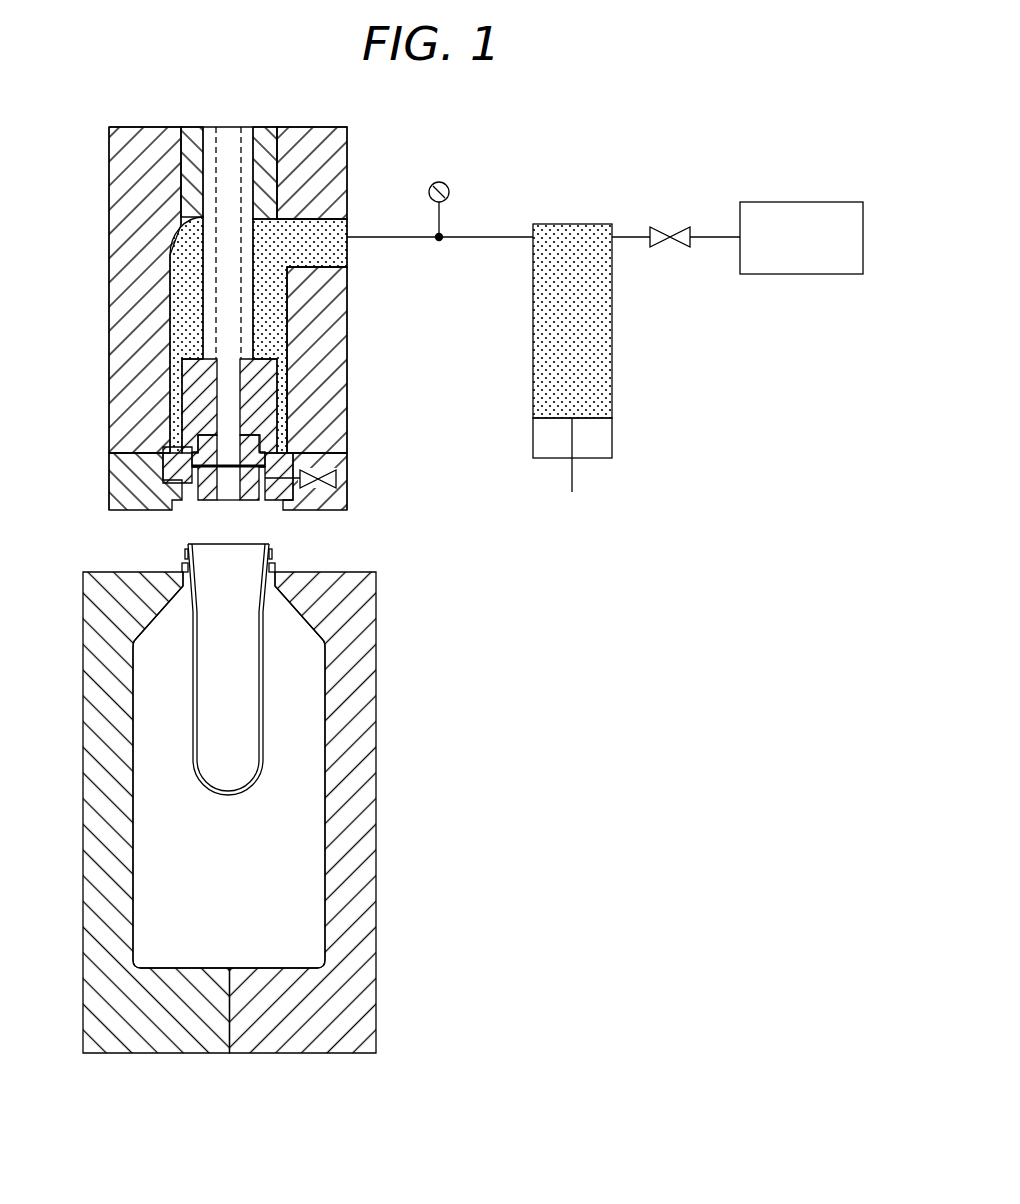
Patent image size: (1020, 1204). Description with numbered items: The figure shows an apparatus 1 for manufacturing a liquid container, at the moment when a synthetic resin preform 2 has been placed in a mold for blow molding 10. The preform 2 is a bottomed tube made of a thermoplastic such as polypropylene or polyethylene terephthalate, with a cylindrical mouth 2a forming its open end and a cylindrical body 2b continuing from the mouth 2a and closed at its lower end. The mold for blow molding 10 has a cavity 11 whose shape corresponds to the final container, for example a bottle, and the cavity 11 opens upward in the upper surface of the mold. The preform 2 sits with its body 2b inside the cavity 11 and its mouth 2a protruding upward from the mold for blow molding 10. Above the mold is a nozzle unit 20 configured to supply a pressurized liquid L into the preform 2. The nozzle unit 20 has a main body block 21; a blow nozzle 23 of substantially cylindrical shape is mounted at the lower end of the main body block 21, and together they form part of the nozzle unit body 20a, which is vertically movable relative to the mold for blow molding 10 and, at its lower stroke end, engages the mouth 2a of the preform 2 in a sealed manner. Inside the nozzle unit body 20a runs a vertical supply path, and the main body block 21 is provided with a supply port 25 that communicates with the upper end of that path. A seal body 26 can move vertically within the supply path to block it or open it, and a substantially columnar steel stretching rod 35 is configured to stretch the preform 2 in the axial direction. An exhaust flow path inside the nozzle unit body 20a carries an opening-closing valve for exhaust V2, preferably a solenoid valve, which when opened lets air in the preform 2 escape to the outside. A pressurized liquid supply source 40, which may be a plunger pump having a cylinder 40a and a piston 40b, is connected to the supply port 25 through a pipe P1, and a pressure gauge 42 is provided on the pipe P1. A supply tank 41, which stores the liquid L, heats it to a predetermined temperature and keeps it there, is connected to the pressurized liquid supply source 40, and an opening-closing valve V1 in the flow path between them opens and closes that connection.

The apparatus for manufacturing a liquid container 1 is at (550, 632).
The preform 2 is at (260, 665).
The mouth 2a is at (274, 548).
The body 2b is at (266, 682).
The mold for blow molding 10 is at (271, 812).
The cavity 11 is at (325, 864).
The nozzle unit 20 is at (359, 292).
The nozzle unit body 20a is at (352, 345).
The main body block 21 is at (135, 279).
The blow nozzle 23 is at (166, 453).
The supply port 25 is at (341, 254).
The seal body 26 is at (279, 388).
The stretching rod 35 is at (232, 410).
The pressurized liquid supply source 40 is at (592, 358).
The cylinder 40a is at (612, 310).
The piston 40b is at (588, 418).
The supply tank 41 is at (805, 202).
The pressure gauge 42 is at (439, 182).
The opening-closing valve V1 is at (675, 232).
The opening-closing valve for exhaust V2 is at (336, 468).
The pipe P1 is at (493, 234).
The liquid L is at (560, 346).